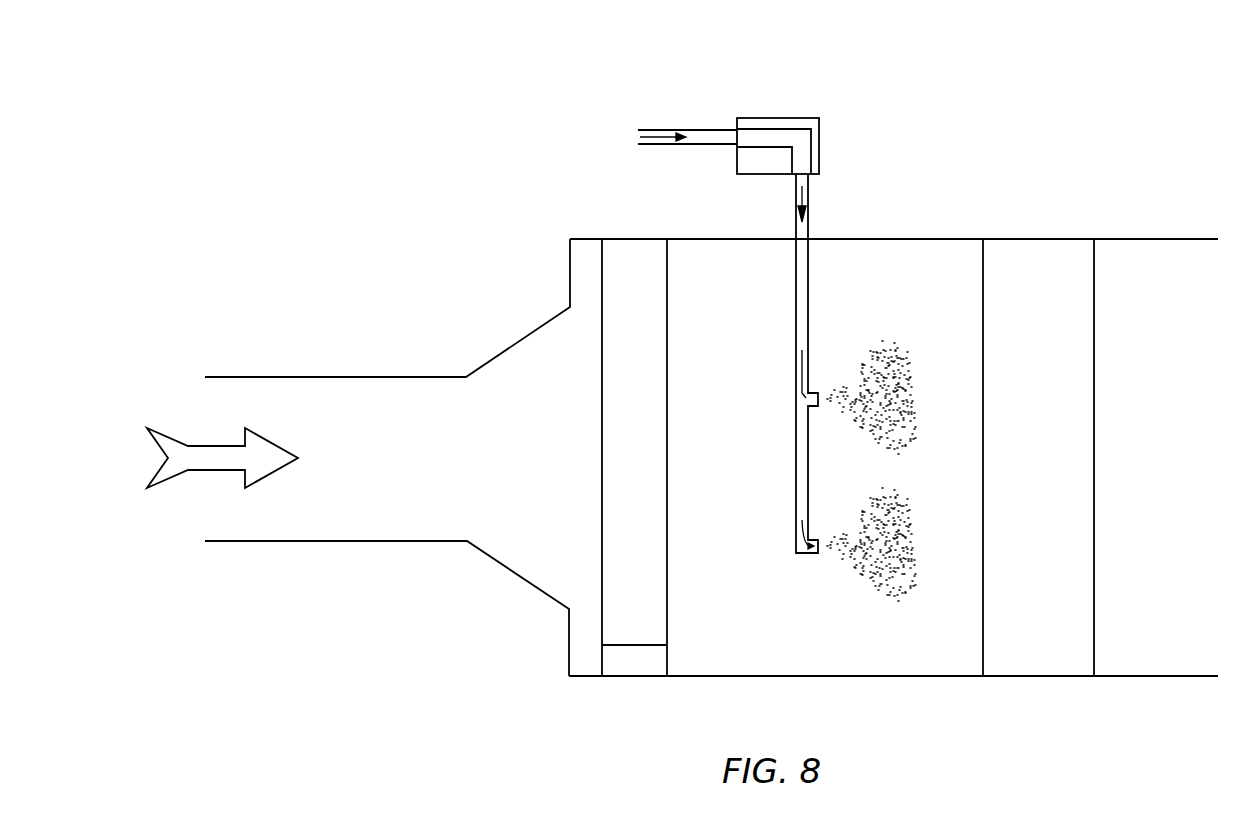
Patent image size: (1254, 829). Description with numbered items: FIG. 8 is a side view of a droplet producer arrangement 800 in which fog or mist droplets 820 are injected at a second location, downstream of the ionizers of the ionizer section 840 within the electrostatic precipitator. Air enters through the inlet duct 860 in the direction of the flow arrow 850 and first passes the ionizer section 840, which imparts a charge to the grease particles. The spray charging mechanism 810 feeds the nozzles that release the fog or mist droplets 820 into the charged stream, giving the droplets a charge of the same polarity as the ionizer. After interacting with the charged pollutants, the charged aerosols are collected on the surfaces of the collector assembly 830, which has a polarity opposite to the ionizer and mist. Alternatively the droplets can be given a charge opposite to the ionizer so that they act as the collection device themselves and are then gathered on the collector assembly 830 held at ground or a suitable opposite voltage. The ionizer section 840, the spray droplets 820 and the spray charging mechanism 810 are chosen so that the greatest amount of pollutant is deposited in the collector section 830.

The spray system 800 is at (349, 214).
The spray charging mechanism 810 is at (783, 118).
The fog or mist droplets 820 is at (898, 348).
The collector assembly 830 is at (1042, 632).
The ionizer section 840 is at (621, 462).
The flow direction arrow 850 is at (215, 446).
The inlet duct 860 is at (518, 343).